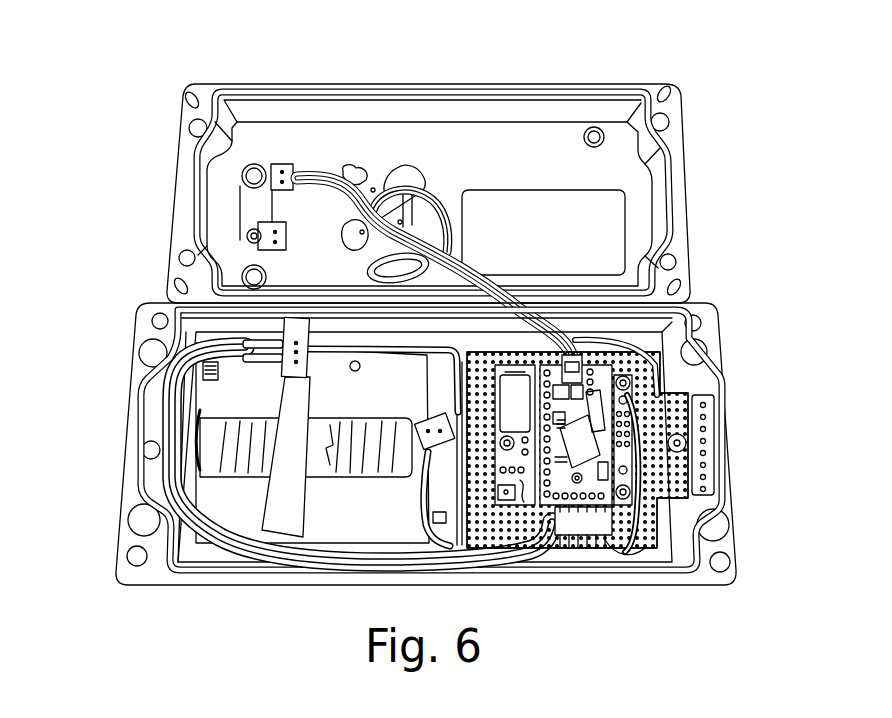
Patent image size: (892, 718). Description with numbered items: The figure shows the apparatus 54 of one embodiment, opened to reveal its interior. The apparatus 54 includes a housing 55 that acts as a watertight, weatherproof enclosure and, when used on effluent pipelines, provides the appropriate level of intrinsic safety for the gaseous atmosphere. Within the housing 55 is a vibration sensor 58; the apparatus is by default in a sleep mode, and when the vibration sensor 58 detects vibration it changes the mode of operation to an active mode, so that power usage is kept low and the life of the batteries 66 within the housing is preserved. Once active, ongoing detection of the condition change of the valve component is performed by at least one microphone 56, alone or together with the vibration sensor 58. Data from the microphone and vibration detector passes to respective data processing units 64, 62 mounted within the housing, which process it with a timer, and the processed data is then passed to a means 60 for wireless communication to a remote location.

The apparatus 54 is at (301, 83).
The housing 55 is at (725, 440).
The microphone 56 is at (228, 173).
The vibration sensor 58 is at (395, 200).
The means for wireless communication 60 is at (270, 333).
The data processing unit 62 is at (680, 388).
The data processing unit 64 is at (657, 460).
The batteries 66 is at (208, 538).